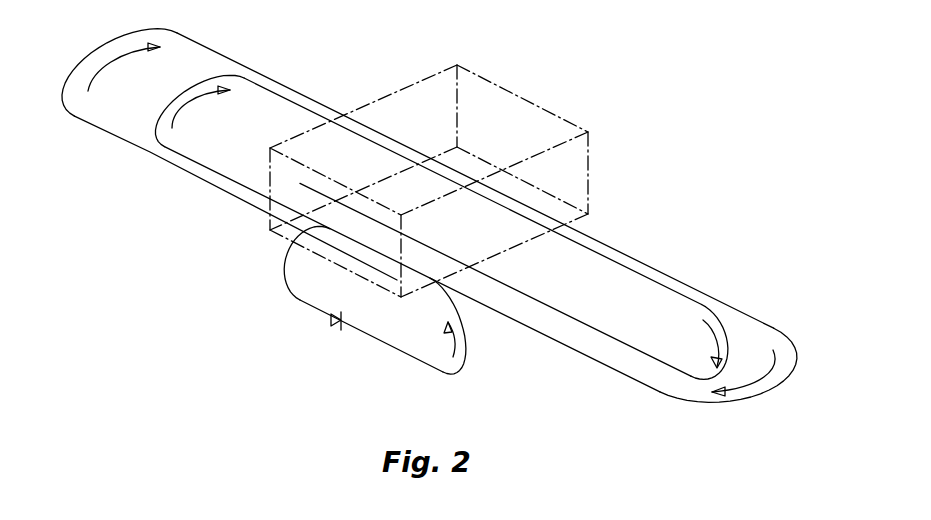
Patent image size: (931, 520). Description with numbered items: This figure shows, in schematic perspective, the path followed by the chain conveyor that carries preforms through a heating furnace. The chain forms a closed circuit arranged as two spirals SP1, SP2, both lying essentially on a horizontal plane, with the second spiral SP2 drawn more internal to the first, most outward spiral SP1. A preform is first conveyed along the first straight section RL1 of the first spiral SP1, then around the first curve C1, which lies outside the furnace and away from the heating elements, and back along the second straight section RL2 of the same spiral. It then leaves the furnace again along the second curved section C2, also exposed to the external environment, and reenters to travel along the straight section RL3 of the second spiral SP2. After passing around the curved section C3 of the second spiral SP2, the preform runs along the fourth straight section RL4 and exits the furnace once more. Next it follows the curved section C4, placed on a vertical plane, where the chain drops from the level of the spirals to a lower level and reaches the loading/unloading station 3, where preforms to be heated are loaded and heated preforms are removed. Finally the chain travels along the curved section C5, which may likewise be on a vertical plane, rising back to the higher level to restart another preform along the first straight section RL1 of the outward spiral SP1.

The first curve C1 is at (95, 53).
The second curved section C2 is at (775, 392).
The curved section of the second spiral C3 is at (168, 100).
The curved section C4 is at (722, 335).
The curved section C5 is at (470, 365).
The first spiral SP1 is at (237, 62).
The second spiral SP2 is at (300, 103).
The first straight section RL1 is at (200, 178).
The second straight section RL2 is at (387, 133).
The straight section of the second spiral RL3 is at (200, 113).
The fourth straight section RL4 is at (563, 235).
The loading/unloading station 3 is at (288, 288).